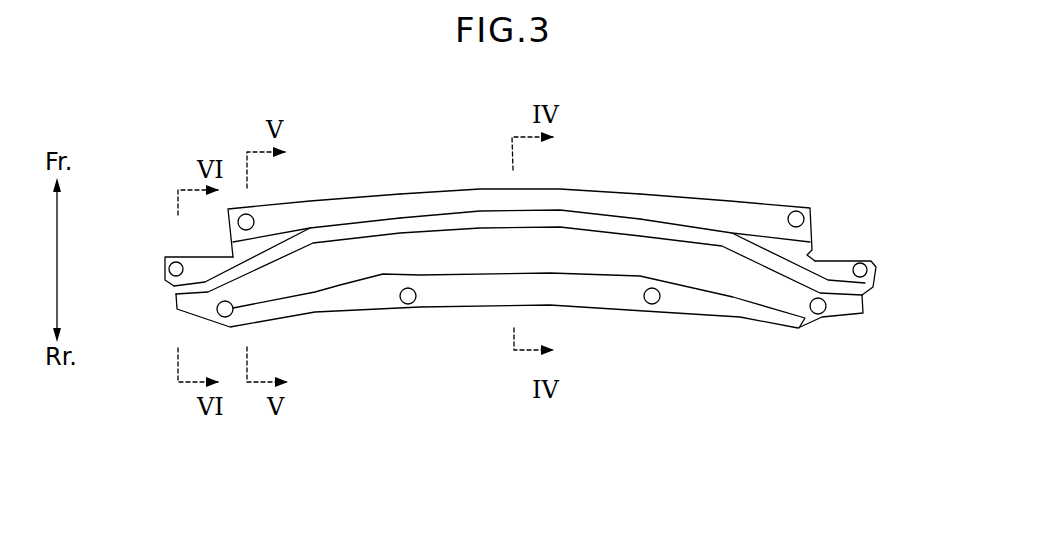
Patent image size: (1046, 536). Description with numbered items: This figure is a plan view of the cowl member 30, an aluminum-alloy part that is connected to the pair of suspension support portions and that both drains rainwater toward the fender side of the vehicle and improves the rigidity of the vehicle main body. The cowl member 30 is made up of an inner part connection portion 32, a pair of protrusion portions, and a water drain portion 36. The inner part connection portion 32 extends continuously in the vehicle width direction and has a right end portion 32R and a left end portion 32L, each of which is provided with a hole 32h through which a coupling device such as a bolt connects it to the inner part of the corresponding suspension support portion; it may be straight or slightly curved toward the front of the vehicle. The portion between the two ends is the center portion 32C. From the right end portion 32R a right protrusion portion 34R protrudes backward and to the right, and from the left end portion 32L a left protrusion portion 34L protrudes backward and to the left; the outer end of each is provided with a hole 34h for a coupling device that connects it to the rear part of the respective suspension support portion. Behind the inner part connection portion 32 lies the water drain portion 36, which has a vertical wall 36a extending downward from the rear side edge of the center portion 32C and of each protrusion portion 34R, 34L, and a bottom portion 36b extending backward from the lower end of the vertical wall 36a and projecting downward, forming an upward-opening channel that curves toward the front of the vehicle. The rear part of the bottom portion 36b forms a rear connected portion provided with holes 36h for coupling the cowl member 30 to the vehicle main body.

The cowl member 30 is at (426, 186).
The inner part connection portion 32 is at (650, 197).
The left end portion 32L is at (262, 220).
The center portion 32C is at (578, 198).
The right end portion 32R is at (776, 217).
The hole 32h is at (236, 206).
The left protrusion portion 34L is at (205, 263).
The right protrusion portion 34R is at (823, 272).
The hole 34h is at (170, 272).
The water drain portion 36 is at (785, 406).
The vertical wall 36a is at (738, 242).
The bottom portion 36b is at (678, 298).
The hole 36h is at (820, 313).